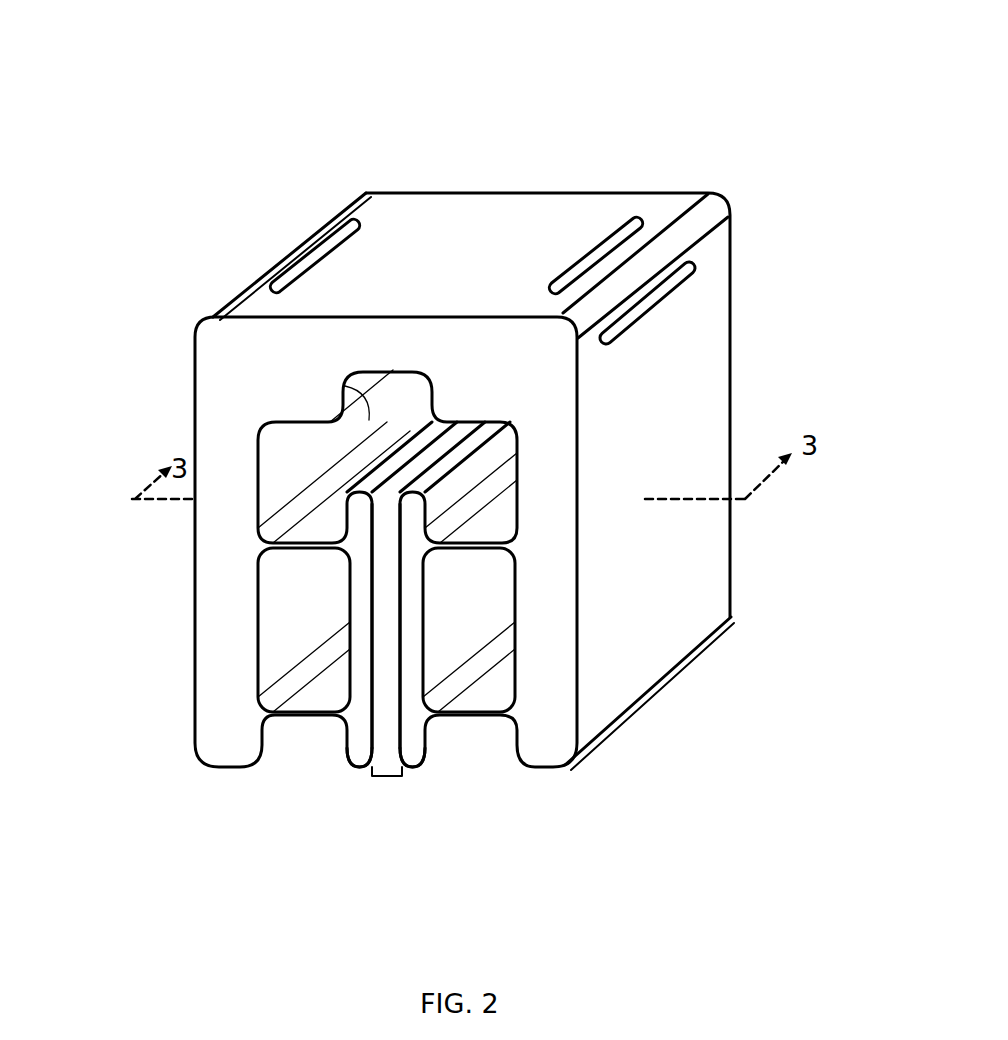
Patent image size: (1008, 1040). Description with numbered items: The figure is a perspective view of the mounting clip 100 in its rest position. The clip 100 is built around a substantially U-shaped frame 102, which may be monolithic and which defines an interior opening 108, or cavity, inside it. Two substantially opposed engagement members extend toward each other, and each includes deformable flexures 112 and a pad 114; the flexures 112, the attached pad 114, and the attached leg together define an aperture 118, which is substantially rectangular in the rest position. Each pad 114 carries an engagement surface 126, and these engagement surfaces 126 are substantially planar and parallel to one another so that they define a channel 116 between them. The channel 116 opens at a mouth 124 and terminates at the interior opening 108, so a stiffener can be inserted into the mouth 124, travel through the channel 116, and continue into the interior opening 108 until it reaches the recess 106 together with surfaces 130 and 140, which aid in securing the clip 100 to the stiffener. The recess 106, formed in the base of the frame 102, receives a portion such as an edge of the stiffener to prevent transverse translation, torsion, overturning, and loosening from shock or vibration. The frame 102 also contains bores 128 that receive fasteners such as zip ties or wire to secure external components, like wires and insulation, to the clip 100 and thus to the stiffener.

The clip 100 is at (423, 109).
The frame 102 is at (700, 548).
The recess 106 is at (342, 393).
The interior opening 108 is at (492, 468).
The deformable flexures 112 is at (300, 712).
The pad 114 is at (413, 705).
The channel 116 is at (386, 578).
The aperture 118 is at (336, 631).
The mouth 124 is at (387, 778).
The engagement surfaces 126 is at (432, 527).
The bores 128 is at (314, 255).
The surface 130 is at (394, 382).
The surface 140 is at (338, 421).